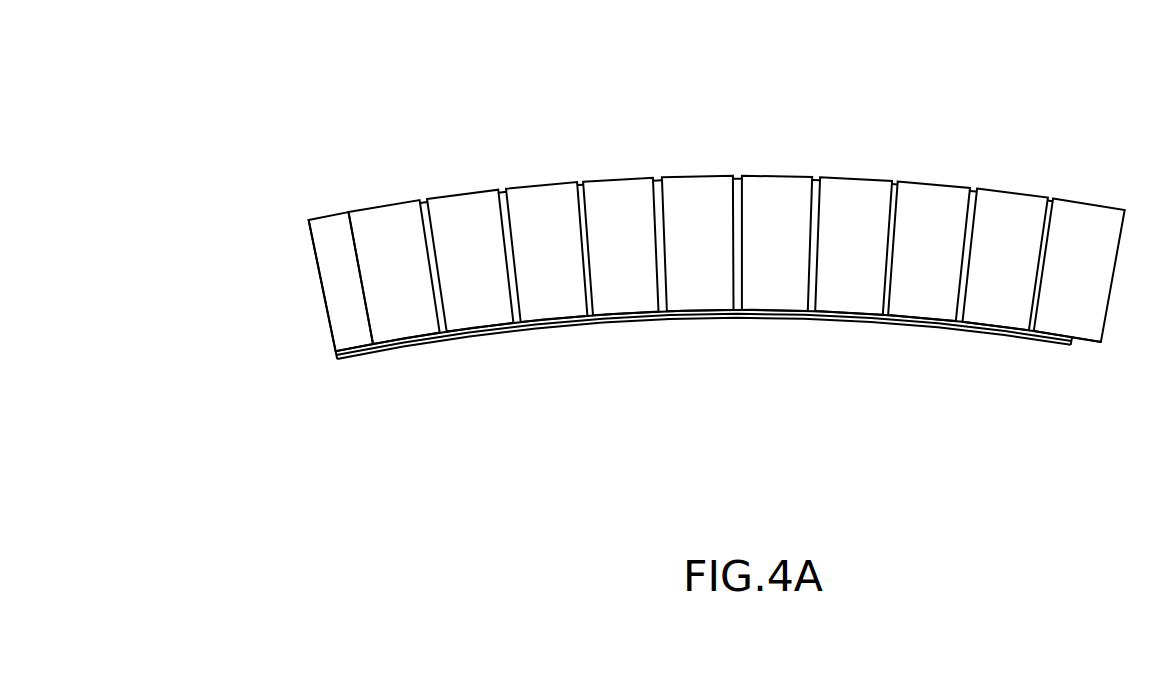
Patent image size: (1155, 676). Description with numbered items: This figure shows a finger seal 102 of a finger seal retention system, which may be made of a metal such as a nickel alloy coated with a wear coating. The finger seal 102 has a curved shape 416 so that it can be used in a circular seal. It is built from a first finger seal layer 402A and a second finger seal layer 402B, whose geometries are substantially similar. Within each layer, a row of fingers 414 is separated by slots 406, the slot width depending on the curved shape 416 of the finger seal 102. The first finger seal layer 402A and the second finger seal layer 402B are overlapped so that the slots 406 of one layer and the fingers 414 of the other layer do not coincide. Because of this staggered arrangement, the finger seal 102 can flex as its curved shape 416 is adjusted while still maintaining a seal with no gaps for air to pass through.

The finger seal 102 is at (317, 101).
The first finger seal layer 402A is at (387, 213).
The second finger seal layer 402B is at (325, 269).
The slots 406 is at (738, 184).
The fingers 414 is at (861, 200).
The curved shape 416 is at (471, 470).